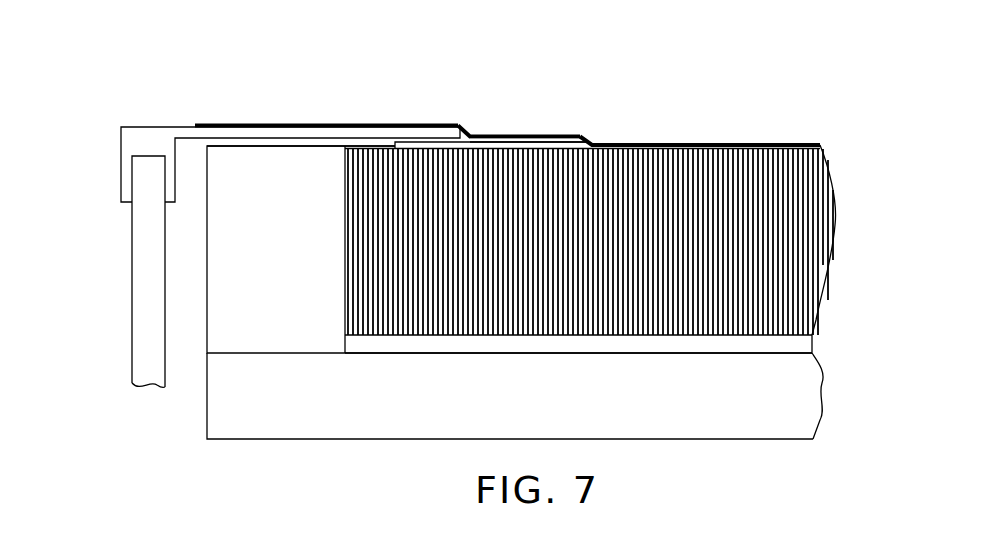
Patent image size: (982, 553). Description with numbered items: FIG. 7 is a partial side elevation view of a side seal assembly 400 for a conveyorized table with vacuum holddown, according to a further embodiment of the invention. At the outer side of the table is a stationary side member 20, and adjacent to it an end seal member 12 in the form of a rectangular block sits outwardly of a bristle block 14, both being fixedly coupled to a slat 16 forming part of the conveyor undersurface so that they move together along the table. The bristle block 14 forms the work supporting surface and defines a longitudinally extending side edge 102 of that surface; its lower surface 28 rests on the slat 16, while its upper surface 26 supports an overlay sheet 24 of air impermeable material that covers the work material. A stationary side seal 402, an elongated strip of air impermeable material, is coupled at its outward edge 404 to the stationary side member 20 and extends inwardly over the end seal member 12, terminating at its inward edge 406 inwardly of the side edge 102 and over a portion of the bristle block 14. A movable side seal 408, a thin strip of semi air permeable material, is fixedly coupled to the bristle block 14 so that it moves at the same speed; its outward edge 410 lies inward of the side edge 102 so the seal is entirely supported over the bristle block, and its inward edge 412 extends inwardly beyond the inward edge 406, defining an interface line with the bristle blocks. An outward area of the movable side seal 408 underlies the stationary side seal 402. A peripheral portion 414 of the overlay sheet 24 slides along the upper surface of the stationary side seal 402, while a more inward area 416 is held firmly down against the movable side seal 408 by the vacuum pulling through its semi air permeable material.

The side seal assembly 400 is at (320, 96).
The stationary side seal 402 is at (116, 86).
The outward edge 404 is at (121, 127).
The stationary side member 20 is at (148, 266).
The end seal member 12 is at (240, 245).
The slat 16 is at (388, 420).
The side edge 102 is at (347, 312).
The bristle block 14 is at (790, 217).
The lower surface 28 is at (767, 355).
The outward edge 410 is at (395, 143).
The peripheral portion 414 is at (267, 126).
The inward edge 406 is at (472, 134).
The inward area 416 is at (507, 140).
The movable side seal 408 is at (537, 142).
The inward edge 412 is at (588, 142).
The overlay sheet 24 is at (732, 145).
The upper surface 26 is at (798, 145).